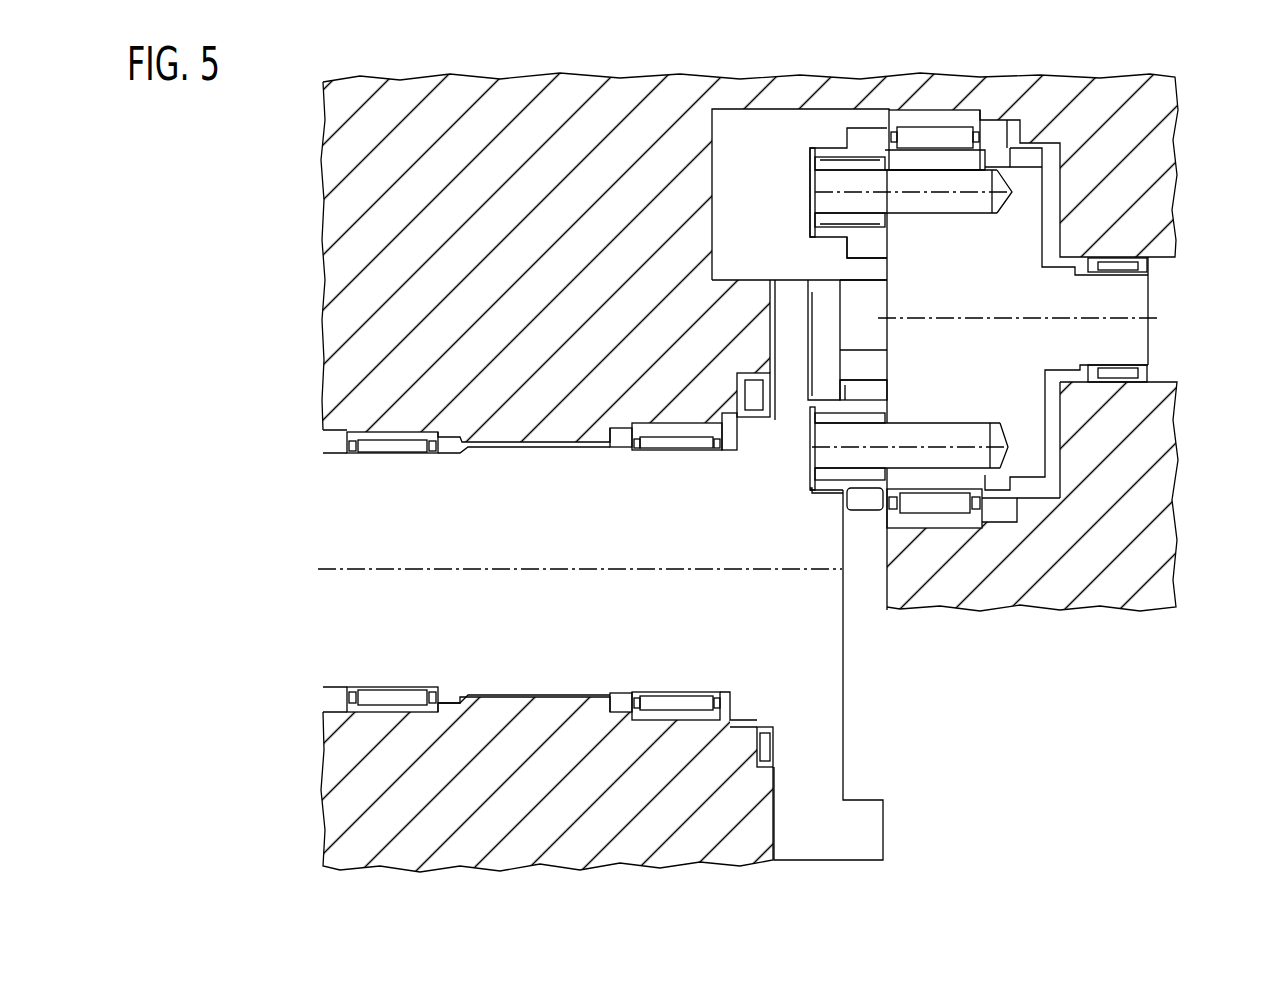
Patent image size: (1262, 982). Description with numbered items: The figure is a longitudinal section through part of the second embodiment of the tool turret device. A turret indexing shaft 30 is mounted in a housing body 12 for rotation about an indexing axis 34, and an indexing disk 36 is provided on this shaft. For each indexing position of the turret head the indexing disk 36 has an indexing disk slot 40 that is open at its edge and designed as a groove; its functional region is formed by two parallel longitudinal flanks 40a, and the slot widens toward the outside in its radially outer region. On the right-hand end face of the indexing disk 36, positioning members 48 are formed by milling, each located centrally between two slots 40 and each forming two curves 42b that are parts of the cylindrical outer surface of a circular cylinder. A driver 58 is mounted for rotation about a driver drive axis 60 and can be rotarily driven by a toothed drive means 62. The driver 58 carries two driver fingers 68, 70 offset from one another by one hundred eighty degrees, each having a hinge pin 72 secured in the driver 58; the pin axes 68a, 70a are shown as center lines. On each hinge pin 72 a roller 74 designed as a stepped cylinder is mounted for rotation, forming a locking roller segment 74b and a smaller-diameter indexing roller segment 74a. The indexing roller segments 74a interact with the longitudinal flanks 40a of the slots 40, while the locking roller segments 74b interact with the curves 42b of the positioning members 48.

The housing body 12 is at (334, 448).
The turret indexing shaft 30 is at (324, 640).
The indexing axis 34 is at (312, 578).
The indexing disk 36 is at (858, 750).
The indexing disk slot 40 is at (825, 354).
The longitudinal flank 40a is at (818, 310).
The curve 42b is at (868, 300).
The positioning member 48 is at (848, 272).
The driver 58 is at (1135, 280).
The driver drive axis 60 is at (1125, 312).
The toothed drive means 62 is at (1033, 487).
The driver finger 68 is at (826, 128).
The pin axis 68a is at (803, 190).
The driver finger 70 is at (797, 451).
The pin axis 70a is at (917, 446).
The hinge pin 72 is at (985, 168).
The roller 74 is at (899, 238).
The indexing roller segment 74a is at (828, 490).
The locking roller segment 74b is at (855, 503).